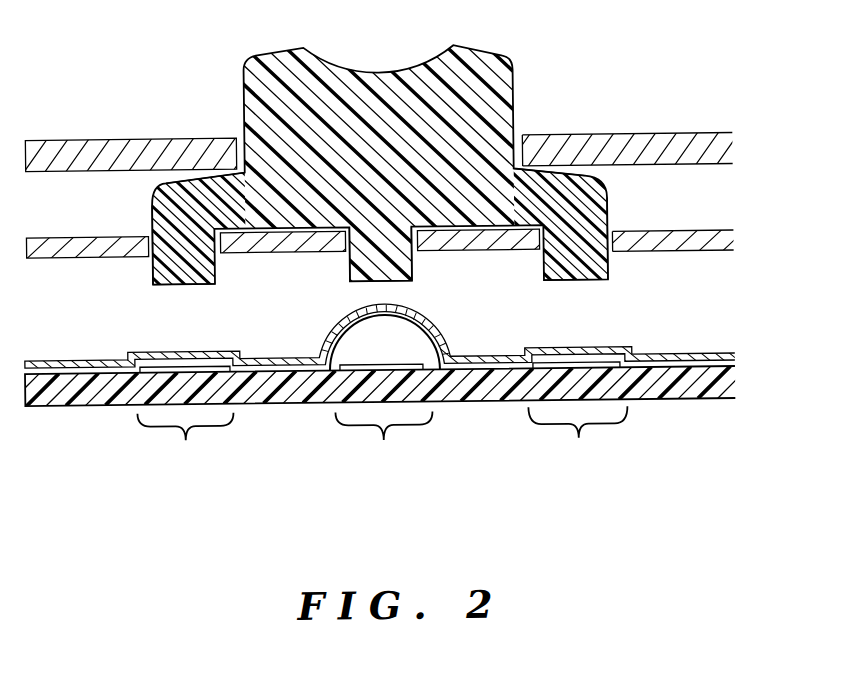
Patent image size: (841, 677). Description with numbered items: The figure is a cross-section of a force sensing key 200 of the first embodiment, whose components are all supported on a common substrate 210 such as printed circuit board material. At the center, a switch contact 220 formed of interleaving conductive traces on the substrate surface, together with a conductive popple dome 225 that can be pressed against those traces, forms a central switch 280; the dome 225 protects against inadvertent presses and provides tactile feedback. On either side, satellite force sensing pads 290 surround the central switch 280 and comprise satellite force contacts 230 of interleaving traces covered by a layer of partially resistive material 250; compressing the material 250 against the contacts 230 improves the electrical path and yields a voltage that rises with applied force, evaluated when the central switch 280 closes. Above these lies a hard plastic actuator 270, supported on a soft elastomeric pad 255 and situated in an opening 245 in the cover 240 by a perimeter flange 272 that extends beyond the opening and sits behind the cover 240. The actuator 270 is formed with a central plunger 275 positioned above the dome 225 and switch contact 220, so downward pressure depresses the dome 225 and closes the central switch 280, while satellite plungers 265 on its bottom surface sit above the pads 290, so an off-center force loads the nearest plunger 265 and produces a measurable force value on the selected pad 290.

The force sensing key 200 is at (660, 529).
The common substrate 210 is at (733, 388).
The switch contact 220 is at (400, 364).
The popple dome 225 is at (329, 334).
The satellite force contacts 230 is at (172, 366).
The cover 240 is at (737, 152).
The opening 245 is at (241, 128).
The partially resistive material 250 is at (737, 360).
The pad 255 is at (737, 244).
The satellite plungers 265 is at (178, 277).
The actuator 270 is at (480, 50).
The flange 272 is at (170, 186).
The central plunger 275 is at (380, 276).
The central switch 280 is at (384, 440).
The satellite force sensing pads 290 is at (382, 439).